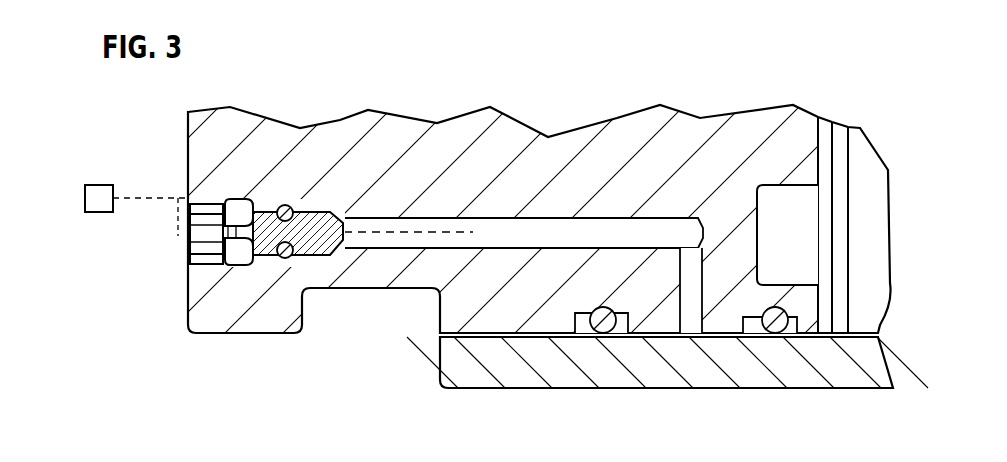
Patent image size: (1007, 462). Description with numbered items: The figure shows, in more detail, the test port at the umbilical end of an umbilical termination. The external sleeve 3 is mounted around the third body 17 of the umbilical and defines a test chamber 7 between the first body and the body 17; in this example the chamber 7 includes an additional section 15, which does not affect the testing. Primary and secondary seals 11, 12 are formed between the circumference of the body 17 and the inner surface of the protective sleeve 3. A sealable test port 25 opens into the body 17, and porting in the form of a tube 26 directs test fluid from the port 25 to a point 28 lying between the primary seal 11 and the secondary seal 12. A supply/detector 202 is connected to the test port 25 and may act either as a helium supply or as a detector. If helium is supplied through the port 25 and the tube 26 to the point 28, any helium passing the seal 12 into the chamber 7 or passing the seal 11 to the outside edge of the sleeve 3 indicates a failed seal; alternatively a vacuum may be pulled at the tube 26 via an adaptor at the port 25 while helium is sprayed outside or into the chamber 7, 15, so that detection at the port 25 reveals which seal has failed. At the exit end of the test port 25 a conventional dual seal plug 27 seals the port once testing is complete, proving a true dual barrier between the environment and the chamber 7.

The sleeve 3 is at (440, 358).
The test chamber 7 is at (872, 305).
The primary seal 11 is at (603, 338).
The secondary seal 12 is at (770, 338).
The additional section 15 is at (797, 250).
The third body 17 is at (397, 132).
The sealable test port 25 is at (176, 240).
The tube 26 is at (623, 230).
The dual seal plug 27 is at (240, 270).
The point between the primary seal and the secondary seal 28 is at (694, 356).
The supply/detector 202 is at (98, 185).